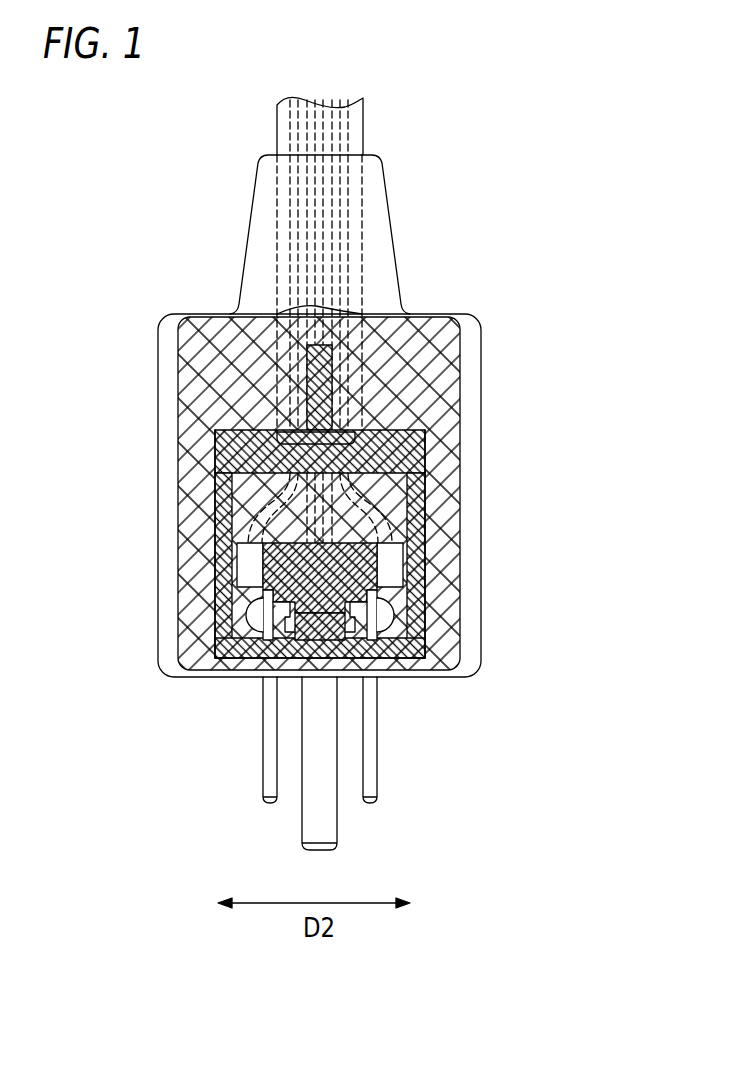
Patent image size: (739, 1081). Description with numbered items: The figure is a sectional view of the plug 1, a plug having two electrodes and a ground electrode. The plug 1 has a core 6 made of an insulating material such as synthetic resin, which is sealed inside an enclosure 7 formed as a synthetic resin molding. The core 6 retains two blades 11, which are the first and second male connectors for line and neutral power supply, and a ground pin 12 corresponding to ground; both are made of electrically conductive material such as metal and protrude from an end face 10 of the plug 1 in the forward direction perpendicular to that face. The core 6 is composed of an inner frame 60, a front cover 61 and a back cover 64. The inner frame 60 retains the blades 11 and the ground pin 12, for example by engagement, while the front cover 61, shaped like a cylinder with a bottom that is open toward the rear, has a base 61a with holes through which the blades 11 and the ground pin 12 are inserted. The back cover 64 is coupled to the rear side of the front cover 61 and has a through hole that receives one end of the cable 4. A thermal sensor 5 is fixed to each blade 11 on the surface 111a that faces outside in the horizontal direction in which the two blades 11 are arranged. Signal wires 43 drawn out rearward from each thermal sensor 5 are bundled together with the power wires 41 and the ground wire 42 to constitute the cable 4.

The plug 1 is at (165, 353).
The cable 4 is at (278, 132).
The thermal sensor 5 is at (250, 565).
The core 6 is at (217, 648).
The enclosure 7 is at (462, 318).
The end face 10 is at (437, 677).
The blade 11 is at (267, 775).
The ground pin 12 is at (330, 825).
The power wire 41 is at (265, 505).
The ground wire 42 is at (335, 525).
The signal wire 43 is at (268, 454).
The inner frame 60 is at (337, 583).
The front cover 61 is at (417, 641).
The base 61a is at (392, 648).
The back cover 64 is at (397, 453).
The surface of blade 111a is at (245, 600).